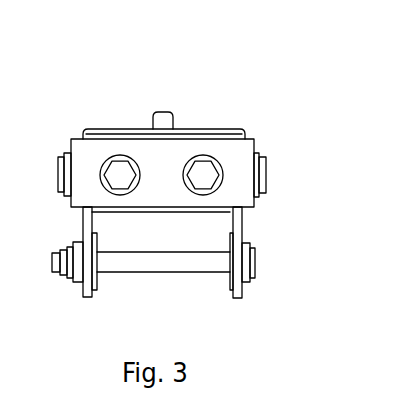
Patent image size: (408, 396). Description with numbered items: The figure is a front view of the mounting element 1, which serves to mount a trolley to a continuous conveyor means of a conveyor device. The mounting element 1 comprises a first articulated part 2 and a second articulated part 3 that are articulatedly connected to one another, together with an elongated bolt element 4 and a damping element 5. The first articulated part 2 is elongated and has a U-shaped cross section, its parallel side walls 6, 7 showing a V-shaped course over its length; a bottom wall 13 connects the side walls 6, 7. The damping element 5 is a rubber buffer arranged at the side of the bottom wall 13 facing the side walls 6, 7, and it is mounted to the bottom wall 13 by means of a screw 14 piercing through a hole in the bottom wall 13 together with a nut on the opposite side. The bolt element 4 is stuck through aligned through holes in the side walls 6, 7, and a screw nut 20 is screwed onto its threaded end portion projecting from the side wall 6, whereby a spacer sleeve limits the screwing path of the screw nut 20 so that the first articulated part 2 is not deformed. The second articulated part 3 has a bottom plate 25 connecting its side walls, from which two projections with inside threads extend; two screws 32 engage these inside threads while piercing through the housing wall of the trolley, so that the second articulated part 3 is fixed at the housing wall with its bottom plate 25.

The mounting element 1 is at (110, 57).
The first articulated part 2 is at (83, 130).
The second articulated part 3 is at (247, 138).
The bolt element 4 is at (158, 274).
The damping element 5 is at (162, 212).
The side wall 6 is at (83, 232).
The side wall 7 is at (242, 236).
The bottom wall 13 is at (203, 130).
The screw 14 is at (165, 113).
The screw nut 20 is at (68, 276).
The bottom plate 25 is at (176, 200).
The screws 32 is at (203, 162).